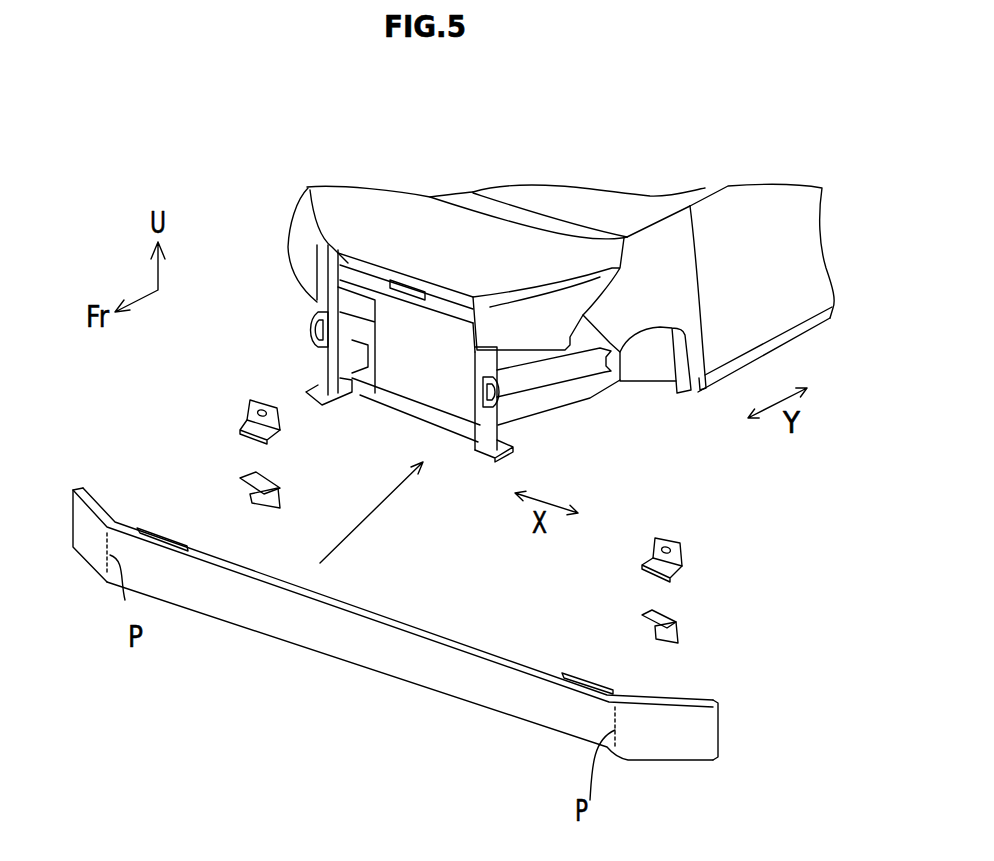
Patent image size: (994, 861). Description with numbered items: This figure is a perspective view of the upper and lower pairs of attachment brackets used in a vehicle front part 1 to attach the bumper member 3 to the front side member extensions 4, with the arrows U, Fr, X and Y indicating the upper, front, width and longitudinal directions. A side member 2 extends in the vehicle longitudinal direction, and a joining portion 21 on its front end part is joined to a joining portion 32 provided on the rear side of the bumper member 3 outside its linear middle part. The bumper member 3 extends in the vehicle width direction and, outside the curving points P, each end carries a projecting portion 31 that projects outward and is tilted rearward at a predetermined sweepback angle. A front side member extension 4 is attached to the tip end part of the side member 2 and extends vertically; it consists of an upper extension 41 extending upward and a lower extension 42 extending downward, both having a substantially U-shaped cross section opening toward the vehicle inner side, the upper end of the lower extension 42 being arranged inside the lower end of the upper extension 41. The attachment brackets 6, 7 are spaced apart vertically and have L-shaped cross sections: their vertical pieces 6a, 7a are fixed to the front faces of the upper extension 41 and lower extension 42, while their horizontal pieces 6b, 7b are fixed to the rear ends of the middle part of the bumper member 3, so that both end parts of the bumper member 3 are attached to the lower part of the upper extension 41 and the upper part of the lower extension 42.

The vehicle front part 1 is at (300, 197).
The side member 2 is at (363, 312).
The joining portion 21 is at (310, 333).
The bumper member 3 is at (388, 638).
The projecting portion 31 is at (88, 535).
The joining portion 32 is at (163, 530).
The front side member extension 4 is at (384, 382).
The upper extension 41 is at (314, 301).
The lower extension 42 is at (352, 383).
The attachment bracket 6 is at (461, 476).
The vertical piece 6a is at (244, 402).
The horizontal piece 6b is at (263, 443).
The attachment bracket 7 is at (464, 567).
The vertical piece 7a is at (260, 506).
The horizontal piece 7b is at (243, 492).